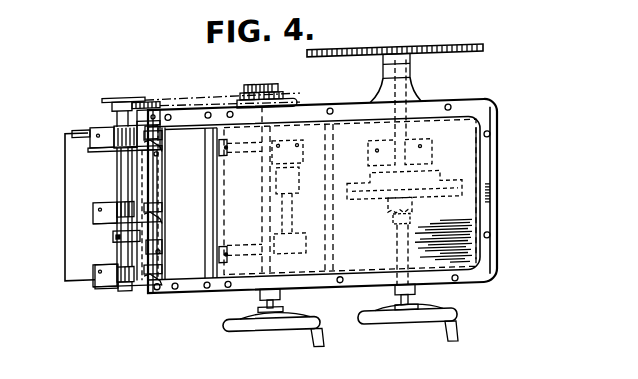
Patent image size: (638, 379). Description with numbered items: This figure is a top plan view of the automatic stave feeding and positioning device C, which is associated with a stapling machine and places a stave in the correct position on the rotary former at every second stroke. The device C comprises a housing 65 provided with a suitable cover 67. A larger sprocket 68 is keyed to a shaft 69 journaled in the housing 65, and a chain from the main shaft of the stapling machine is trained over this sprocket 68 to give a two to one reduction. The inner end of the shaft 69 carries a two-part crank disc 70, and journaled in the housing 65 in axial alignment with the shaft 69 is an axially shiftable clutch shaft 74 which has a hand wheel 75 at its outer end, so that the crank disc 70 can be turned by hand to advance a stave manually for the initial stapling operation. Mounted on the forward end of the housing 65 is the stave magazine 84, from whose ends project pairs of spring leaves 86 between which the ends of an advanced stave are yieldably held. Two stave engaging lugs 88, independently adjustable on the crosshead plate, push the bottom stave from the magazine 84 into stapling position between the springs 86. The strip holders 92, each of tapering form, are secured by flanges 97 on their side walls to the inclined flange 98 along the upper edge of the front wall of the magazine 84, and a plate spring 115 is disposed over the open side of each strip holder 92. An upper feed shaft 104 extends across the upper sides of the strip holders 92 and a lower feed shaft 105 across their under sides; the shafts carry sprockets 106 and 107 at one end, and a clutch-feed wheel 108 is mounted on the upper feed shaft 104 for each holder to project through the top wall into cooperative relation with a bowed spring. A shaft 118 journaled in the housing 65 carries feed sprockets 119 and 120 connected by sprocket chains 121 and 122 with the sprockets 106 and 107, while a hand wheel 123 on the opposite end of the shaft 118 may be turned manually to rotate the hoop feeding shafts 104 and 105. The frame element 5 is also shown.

The frame side plate 5 is at (72, 218).
The housing 65 is at (497, 184).
The cover 67 is at (468, 218).
The larger sprocket 68 is at (474, 63).
The shaft 69 is at (405, 138).
The two-part crank disc 70 is at (463, 173).
The clutch shaft 74 is at (397, 253).
The hand wheel 75 is at (381, 332).
The stave magazine 84 is at (217, 279).
The spring leaves 86 is at (88, 135).
The stave engaging lugs 88 is at (222, 156).
The strip holders 92 is at (100, 125).
The flanges 97 is at (163, 253).
The inclined flange 98 is at (163, 231).
The upper feed shaft 104 is at (137, 161).
The lower feed shaft 105 is at (133, 163).
The sprocket 106 is at (110, 97).
The sprocket 107 is at (147, 97).
The clutch-feed wheel 108 is at (107, 129).
The plate spring 115 is at (110, 293).
The shaft 118 is at (288, 263).
The feed sprocket 119 is at (283, 96).
The feed sprocket 120 is at (285, 105).
The sprocket chain 121 is at (188, 99).
The sprocket chain 122 is at (201, 106).
The hand wheel 123 is at (256, 331).
The automatic stave feeding and positioning device C is at (490, 262).